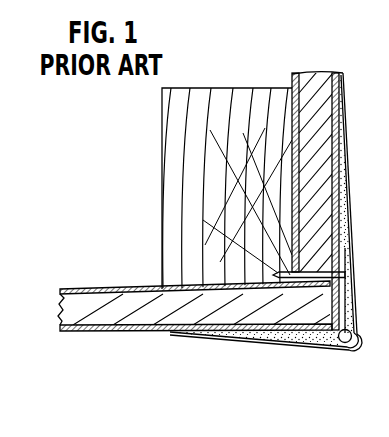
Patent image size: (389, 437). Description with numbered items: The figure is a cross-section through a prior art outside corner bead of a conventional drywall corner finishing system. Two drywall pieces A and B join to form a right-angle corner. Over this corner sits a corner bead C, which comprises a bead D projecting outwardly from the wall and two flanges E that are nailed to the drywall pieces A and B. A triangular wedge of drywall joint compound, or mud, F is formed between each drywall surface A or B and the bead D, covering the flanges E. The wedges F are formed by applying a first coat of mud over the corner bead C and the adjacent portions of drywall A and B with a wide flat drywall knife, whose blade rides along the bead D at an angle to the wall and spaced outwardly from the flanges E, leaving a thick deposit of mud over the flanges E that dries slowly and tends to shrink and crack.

The drywall piece A is at (100, 302).
The drywall piece B is at (328, 128).
The corner bead C is at (290, 345).
The bead D is at (345, 348).
The flange E is at (352, 261).
The drywall joint compound wedge F is at (348, 207).